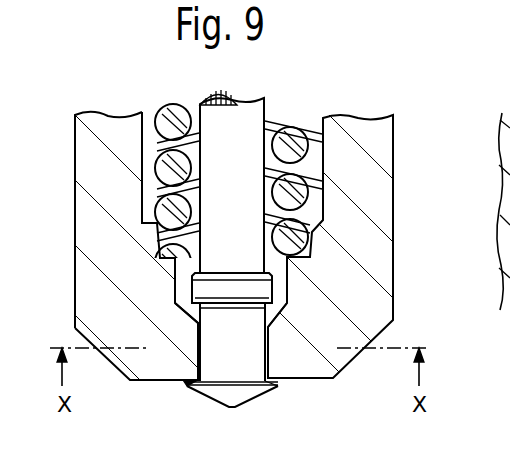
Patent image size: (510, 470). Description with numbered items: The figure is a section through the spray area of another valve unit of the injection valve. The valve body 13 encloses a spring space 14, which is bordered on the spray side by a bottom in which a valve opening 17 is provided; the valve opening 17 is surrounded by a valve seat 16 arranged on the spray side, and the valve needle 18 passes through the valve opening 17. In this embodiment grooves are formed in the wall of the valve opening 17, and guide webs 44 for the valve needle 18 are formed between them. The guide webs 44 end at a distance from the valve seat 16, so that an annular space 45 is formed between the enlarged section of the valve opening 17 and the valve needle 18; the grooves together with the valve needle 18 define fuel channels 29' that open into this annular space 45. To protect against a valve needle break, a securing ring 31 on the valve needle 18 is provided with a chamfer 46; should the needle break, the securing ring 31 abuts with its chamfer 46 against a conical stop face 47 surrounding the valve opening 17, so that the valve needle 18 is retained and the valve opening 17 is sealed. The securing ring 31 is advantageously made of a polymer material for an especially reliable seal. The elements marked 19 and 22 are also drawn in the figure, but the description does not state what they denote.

The valve body 13 is at (93, 153).
The spring space 14 is at (158, 188).
The valve seat 16 is at (266, 390).
The valve opening 17 is at (185, 383).
The valve needle 18 is at (243, 150).
The nozzle cone 19 is at (228, 397).
The housing body (right section) 22 is at (295, 147).
The fuel channels 29' is at (326, 341).
The securing ring 31 is at (243, 288).
The guide webs 44 is at (190, 332).
The annular space 45 is at (333, 378).
The chamfer 46 is at (287, 310).
The conical stop face 47 is at (176, 300).